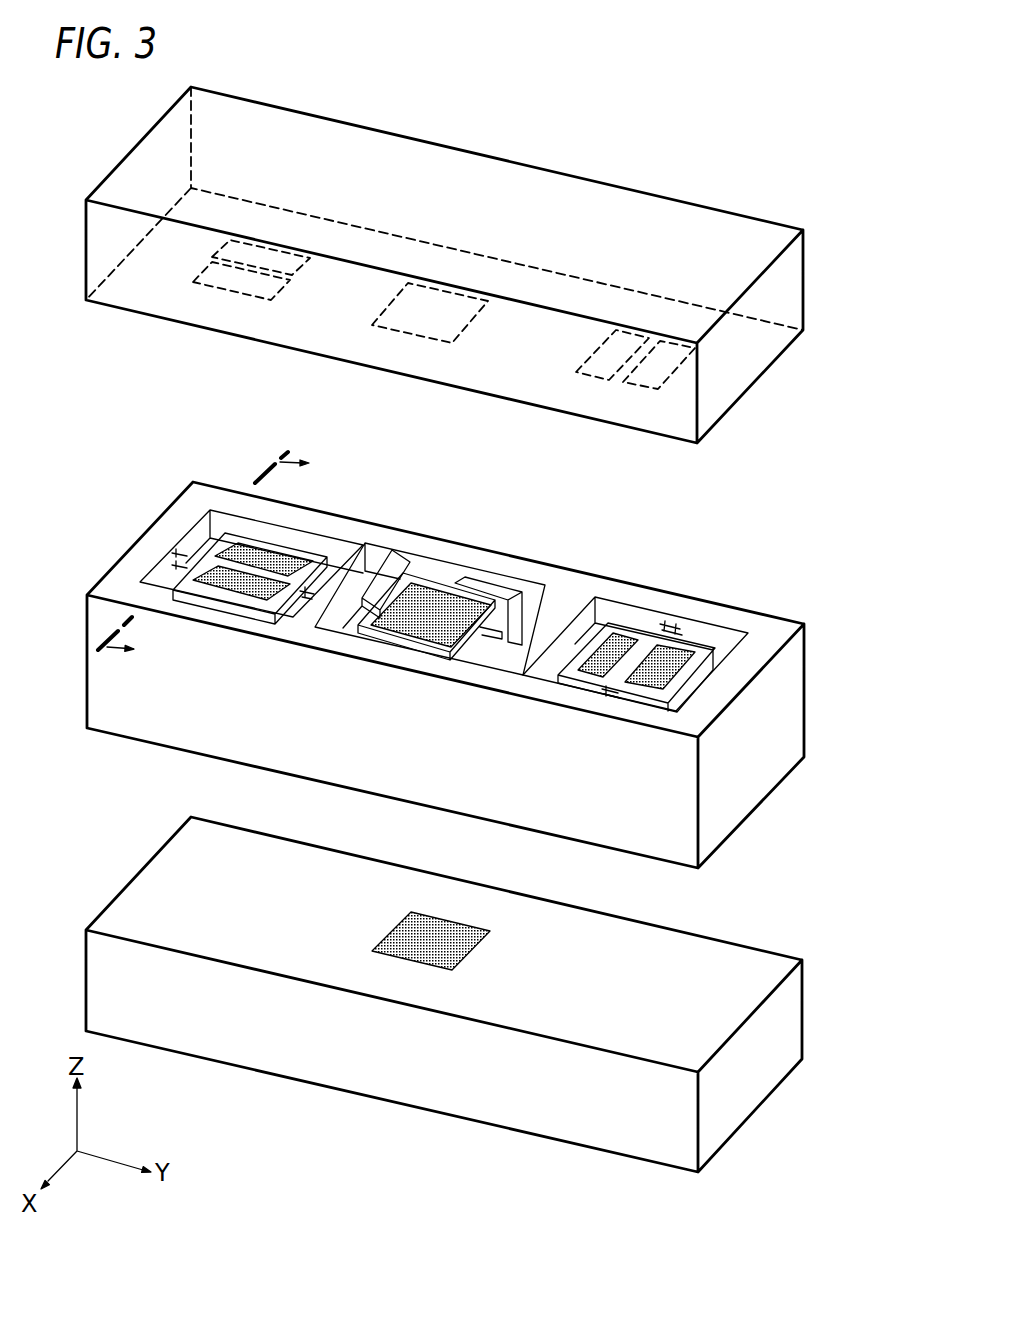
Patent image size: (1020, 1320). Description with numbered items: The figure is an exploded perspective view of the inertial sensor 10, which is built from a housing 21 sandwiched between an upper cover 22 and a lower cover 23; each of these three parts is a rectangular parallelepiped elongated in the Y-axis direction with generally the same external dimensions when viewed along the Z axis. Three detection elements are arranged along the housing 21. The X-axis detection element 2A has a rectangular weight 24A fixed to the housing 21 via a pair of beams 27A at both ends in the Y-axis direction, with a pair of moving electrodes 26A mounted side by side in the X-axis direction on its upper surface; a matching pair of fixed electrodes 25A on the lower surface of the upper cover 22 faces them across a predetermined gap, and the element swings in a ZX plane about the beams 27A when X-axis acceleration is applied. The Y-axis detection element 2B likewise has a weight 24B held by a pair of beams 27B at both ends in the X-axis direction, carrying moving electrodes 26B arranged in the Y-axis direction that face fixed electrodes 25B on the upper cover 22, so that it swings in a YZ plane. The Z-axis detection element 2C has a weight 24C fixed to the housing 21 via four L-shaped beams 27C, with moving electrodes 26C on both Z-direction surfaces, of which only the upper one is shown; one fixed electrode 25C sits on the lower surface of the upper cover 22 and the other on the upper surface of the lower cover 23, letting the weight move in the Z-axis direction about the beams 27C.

The inertial sensor 10 is at (122, 426).
The housing 21 is at (795, 651).
The upper cover 22 is at (726, 227).
The lower cover 23 is at (767, 965).
The X-axis detection element 2A is at (114, 452).
The Y-axis detection element 2B is at (732, 536).
The Z-axis detection element 2C is at (524, 488).
The weight 24A is at (187, 577).
The weight 24B is at (643, 633).
The weight 24C is at (433, 587).
The fixed electrodes 25A is at (301, 348).
The fixed electrodes 25B is at (657, 437).
The fixed electrodes 25C is at (427, 327).
The moving electrodes 26A is at (263, 550).
The moving electrodes 26B is at (592, 672).
The moving electrodes 26C is at (433, 633).
The beams 27A is at (312, 588).
The beams 27B is at (607, 687).
The beams 27C is at (342, 632).